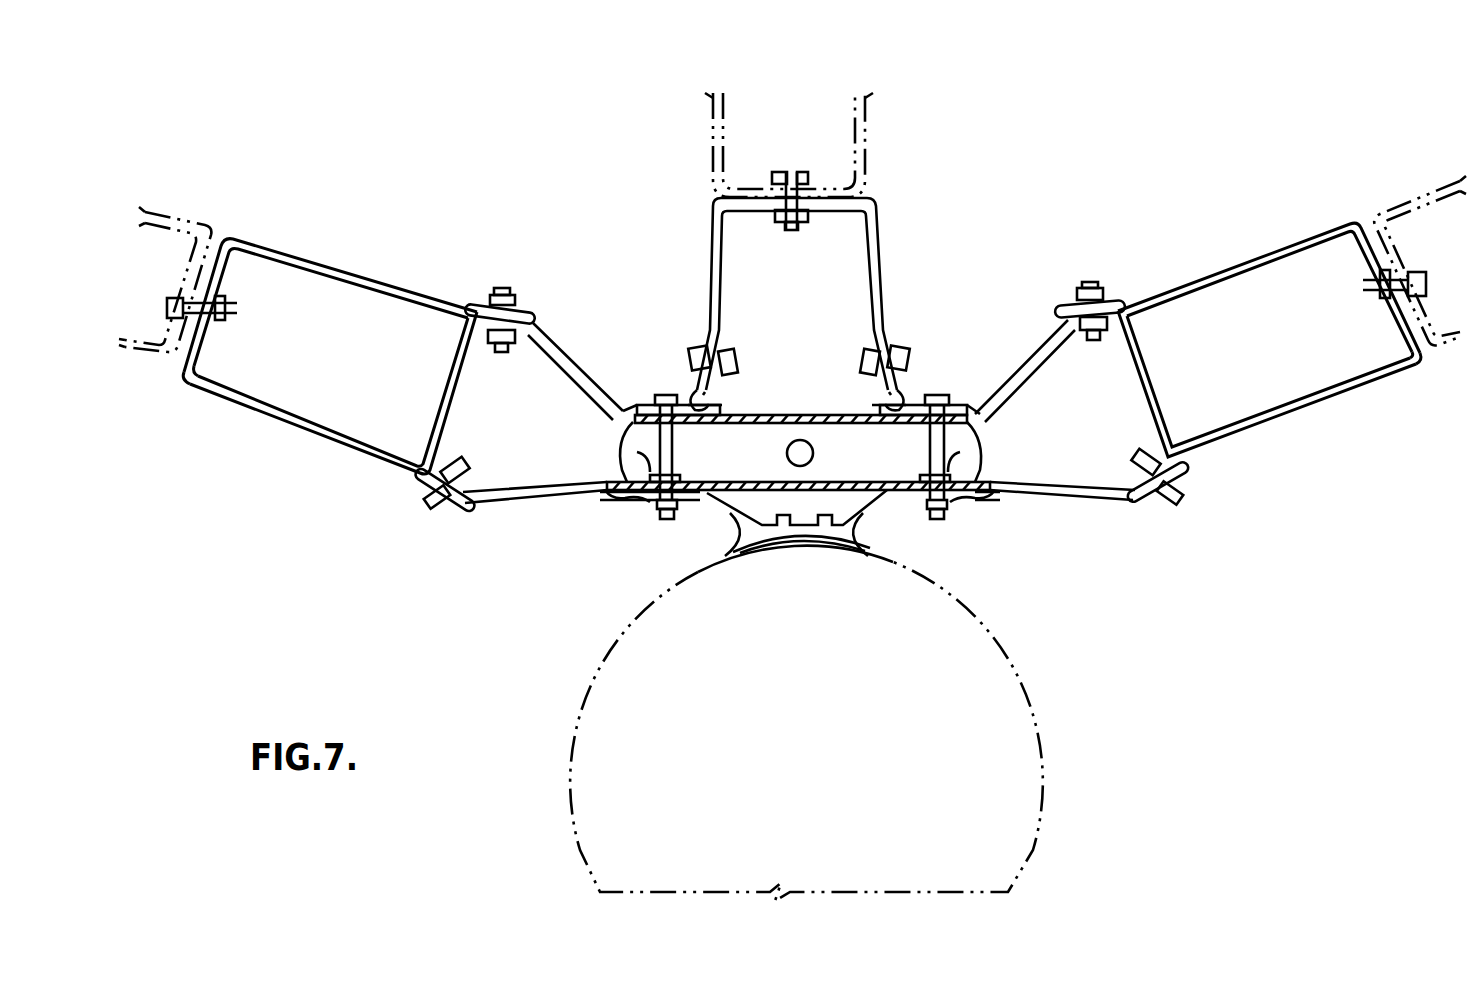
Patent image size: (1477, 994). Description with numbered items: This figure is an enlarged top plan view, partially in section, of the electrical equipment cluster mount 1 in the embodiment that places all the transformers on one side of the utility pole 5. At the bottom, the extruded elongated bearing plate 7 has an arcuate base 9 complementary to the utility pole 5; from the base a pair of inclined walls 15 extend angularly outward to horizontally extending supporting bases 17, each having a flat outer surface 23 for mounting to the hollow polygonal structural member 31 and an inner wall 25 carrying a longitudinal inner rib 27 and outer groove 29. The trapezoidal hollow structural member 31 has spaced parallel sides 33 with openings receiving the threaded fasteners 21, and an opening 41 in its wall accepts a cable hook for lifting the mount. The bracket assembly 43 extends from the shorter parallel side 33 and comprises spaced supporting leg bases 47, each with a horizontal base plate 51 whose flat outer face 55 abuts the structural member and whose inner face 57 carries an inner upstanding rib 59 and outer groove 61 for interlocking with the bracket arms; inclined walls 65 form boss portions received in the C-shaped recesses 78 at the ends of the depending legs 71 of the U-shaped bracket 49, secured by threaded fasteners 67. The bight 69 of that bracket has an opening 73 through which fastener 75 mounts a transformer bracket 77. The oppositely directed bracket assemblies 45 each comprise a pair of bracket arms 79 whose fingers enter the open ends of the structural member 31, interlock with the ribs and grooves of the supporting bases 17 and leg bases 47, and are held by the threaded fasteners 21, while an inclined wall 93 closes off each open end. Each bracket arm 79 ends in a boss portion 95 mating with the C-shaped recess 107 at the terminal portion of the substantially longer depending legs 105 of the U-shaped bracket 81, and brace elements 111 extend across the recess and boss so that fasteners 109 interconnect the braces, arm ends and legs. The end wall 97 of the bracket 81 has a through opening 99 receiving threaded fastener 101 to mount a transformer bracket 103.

The electrical equipment cluster mount 1 is at (1022, 262).
The utility pole 5 is at (988, 690).
The elongated bearing plate 7 is at (776, 526).
The arcuate base 9 is at (872, 551).
The inclined walls 15 is at (730, 515).
The supporting base 17 is at (640, 500).
The threaded fastener 21 is at (934, 456).
The outer surface 23 is at (626, 452).
The inner wall 25 is at (658, 510).
The inner rib 27 is at (716, 498).
The outer groove 29 is at (605, 483).
The hollow polygonal structural member 31 is at (798, 441).
The parallel sides 33 is at (774, 415).
The opening 41 is at (786, 454).
The bracket assembly 43 is at (922, 272).
The bracket assembly 45 is at (525, 275).
The supporting leg base 47 is at (698, 398).
The U-shaped bracket 49 is at (801, 270).
The base plate 51 is at (818, 456).
The outer face 55 is at (988, 438).
The inner face 57 is at (960, 389).
The inner upstanding rib 59 is at (712, 405).
The outer groove 61 is at (633, 412).
The inclined wall 65 is at (716, 358).
The threaded fastener 67 is at (735, 367).
The bight 69 is at (822, 205).
The depending legs 71 is at (710, 277).
The opening 73 is at (782, 196).
The fastener 75 is at (806, 186).
The transformer bracket 77 is at (712, 179).
The C-shaped recess 78 is at (710, 337).
The bracket arm 79 is at (587, 375).
The U-shaped bracket 81 is at (794, 374).
The inclined wall 93 is at (982, 450).
The boss portion 95 is at (470, 324).
The end wall 97 is at (192, 364).
The through opening 99 is at (203, 301).
The threaded fastener 101 is at (794, 254).
The transformer bracket 103 is at (166, 213).
The depending legs 105 is at (356, 282).
The C-shaped recess 107 is at (514, 305).
The fastener 109 is at (503, 355).
The brace element 111 is at (420, 442).